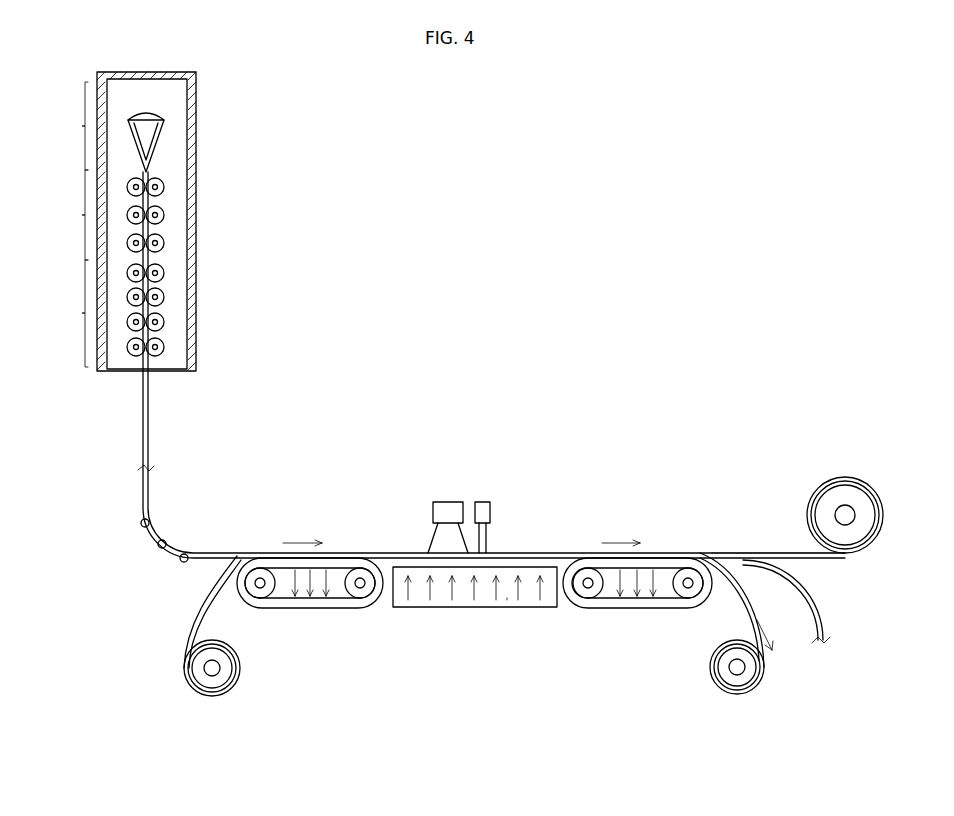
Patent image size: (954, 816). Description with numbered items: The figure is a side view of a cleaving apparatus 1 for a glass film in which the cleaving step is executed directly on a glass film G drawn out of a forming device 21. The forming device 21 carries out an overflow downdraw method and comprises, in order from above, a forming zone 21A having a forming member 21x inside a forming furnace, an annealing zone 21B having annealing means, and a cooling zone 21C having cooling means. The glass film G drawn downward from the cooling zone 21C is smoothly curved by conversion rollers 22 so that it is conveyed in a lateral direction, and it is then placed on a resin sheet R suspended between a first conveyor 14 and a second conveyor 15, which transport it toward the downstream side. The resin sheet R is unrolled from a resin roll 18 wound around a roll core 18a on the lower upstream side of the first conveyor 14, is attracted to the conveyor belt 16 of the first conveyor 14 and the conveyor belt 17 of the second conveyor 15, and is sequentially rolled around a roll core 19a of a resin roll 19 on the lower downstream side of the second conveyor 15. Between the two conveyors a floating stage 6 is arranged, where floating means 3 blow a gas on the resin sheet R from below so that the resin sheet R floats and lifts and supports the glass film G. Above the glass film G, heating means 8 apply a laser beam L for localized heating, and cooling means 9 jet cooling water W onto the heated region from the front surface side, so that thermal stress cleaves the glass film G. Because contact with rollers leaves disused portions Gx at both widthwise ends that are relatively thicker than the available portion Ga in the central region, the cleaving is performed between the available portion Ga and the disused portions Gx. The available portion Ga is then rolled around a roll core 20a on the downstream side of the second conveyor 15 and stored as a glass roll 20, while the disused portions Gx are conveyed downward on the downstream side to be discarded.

The cleaving apparatus 1 is at (563, 434).
The floating means 3 is at (457, 610).
The floating stage 6 is at (507, 600).
The heating means 8 is at (448, 502).
The cooling means 9 is at (483, 502).
The first conveyor 14 is at (310, 612).
The second conveyor 15 is at (635, 612).
The conveyor belt 16 is at (338, 551).
The conveyor belt 17 is at (658, 551).
The resin roll 18 is at (228, 697).
The roll core 18a is at (236, 669).
The resin roll 19 is at (714, 695).
The roll core 19a is at (758, 673).
The glass roll 20 is at (856, 472).
The roll core 20a is at (856, 513).
The forming device 21 is at (222, 94).
The forming zone 21A is at (66, 126).
The annealing zone 21B is at (104, 215).
The cooling zone 21C is at (104, 313).
The forming member 21x is at (160, 131).
The conversion rollers 22 is at (180, 560).
The glass film G is at (150, 414).
The available portion Ga is at (783, 552).
The disused portions Gx is at (816, 590).
The resin sheet R is at (176, 652).
The cooling water W is at (433, 539).
The laser beam L is at (488, 539).